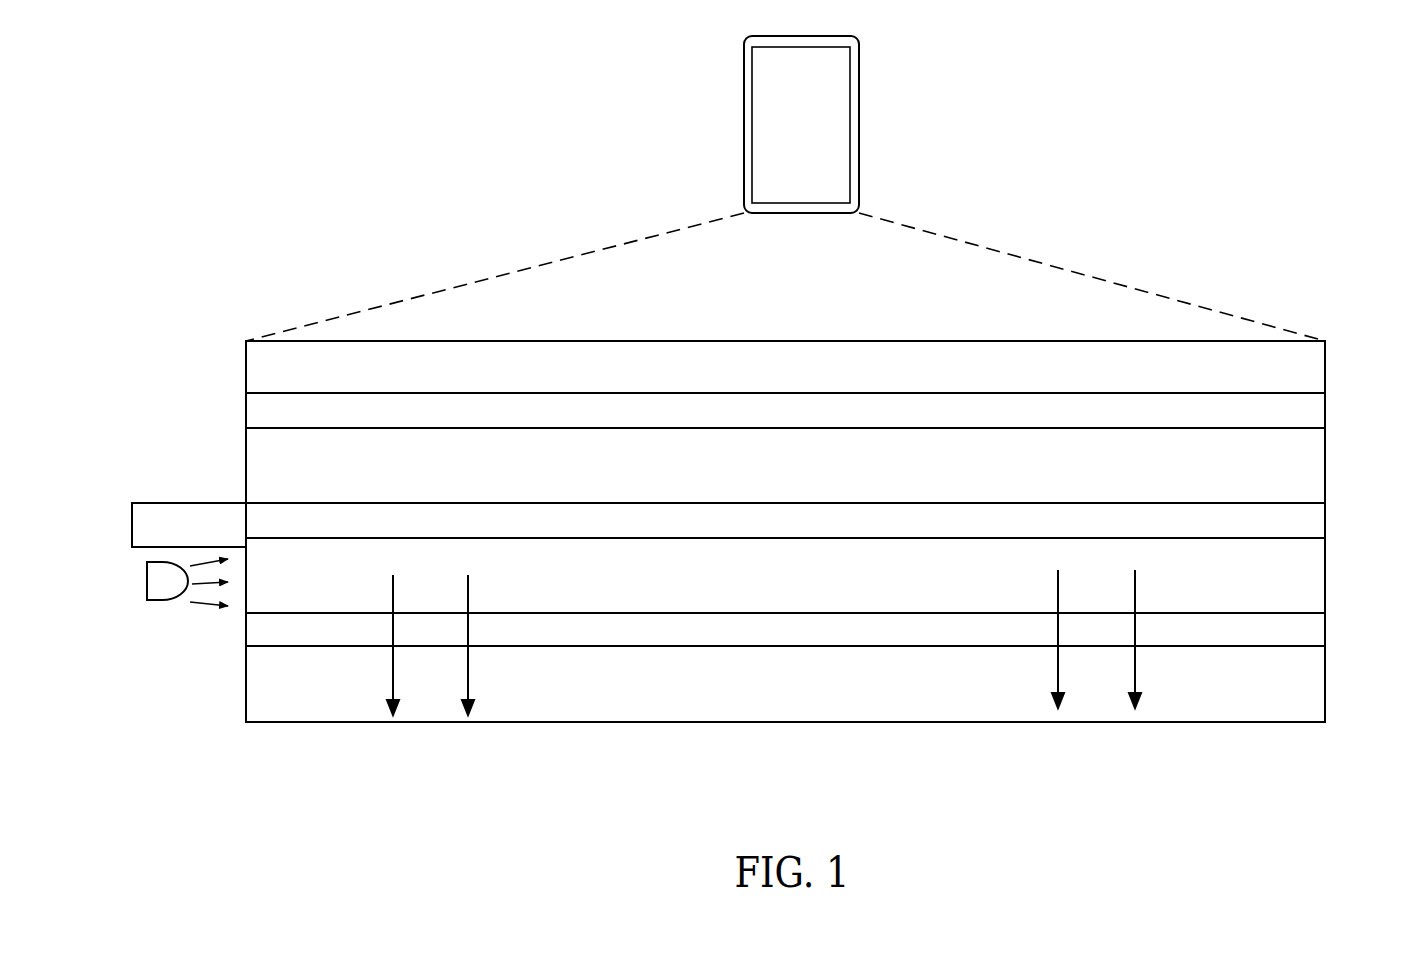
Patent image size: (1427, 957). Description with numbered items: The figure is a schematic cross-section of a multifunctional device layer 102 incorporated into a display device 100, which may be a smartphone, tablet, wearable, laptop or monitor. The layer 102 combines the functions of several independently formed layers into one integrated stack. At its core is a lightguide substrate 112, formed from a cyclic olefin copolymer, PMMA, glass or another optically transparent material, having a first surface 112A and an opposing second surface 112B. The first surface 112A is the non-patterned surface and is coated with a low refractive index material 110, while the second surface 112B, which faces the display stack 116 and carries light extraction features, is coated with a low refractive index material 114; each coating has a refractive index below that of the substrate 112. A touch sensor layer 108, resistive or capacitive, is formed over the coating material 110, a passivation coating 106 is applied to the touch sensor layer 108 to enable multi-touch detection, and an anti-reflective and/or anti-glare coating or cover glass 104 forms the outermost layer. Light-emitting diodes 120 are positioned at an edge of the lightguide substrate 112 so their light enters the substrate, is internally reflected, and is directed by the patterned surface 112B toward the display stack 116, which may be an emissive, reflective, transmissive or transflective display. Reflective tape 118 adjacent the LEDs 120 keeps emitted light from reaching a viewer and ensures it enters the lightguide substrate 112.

The display device 100 is at (858, 86).
The multifunctional device layer 102 is at (813, 319).
The anti-reflective and/or anti-glare coating or cover glass 104 is at (1325, 359).
The passivation coating 106 is at (1325, 412).
The touch sensor layer 108 is at (1325, 463).
The low refractive index material 110 is at (1325, 512).
The lightguide substrate 112 is at (1325, 573).
The first surface 112A is at (1297, 538).
The second surface 112B is at (1297, 612).
The low refractive index material 114 is at (1325, 635).
The display stack 116 is at (1325, 682).
The reflective tape 118 is at (140, 503).
The light-emitting diodes 120 is at (153, 600).